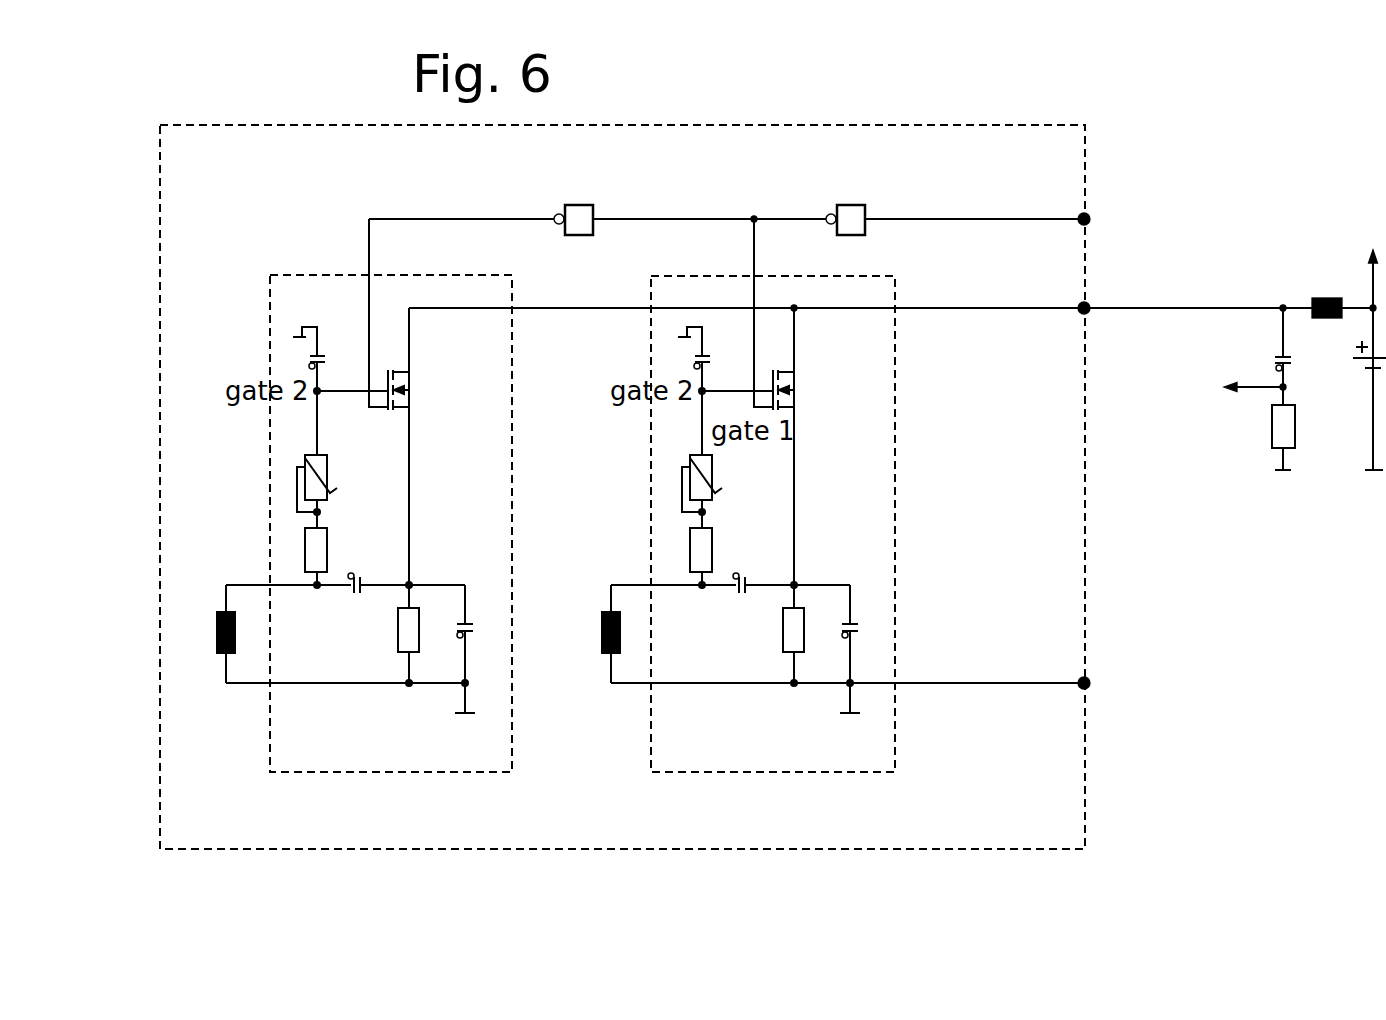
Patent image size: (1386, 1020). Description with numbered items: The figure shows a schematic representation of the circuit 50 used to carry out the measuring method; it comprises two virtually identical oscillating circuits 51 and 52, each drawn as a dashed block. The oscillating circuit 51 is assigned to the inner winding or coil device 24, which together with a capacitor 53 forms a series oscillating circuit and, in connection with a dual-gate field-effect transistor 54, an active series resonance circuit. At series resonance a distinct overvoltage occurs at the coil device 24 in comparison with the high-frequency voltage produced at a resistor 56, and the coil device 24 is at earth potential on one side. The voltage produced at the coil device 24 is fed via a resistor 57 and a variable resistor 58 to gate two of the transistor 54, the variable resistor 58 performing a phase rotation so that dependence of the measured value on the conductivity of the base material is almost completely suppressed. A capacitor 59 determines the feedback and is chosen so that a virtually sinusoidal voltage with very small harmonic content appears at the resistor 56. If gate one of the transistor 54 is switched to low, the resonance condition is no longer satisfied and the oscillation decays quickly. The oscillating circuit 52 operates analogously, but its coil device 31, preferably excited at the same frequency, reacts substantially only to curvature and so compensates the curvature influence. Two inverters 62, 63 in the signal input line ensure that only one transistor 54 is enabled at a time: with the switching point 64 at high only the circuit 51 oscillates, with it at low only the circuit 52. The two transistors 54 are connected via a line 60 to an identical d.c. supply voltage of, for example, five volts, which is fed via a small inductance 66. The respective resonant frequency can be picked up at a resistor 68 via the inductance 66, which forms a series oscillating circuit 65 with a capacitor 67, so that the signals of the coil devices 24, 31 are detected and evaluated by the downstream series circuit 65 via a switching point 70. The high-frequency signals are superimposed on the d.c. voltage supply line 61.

The coil device 24 is at (211, 673).
The coil device 31 is at (597, 673).
The circuit 50 is at (170, 857).
The oscillating circuit 51 is at (381, 793).
The oscillating circuit 52 is at (750, 793).
The capacitor 53 is at (352, 592).
The dual-gate field-effect transistor 54 is at (433, 418).
The resistor 56 is at (400, 637).
The resistor 57 is at (317, 552).
The variable resistor 58 is at (284, 450).
The capacitor 59 is at (477, 604).
The line 60 is at (968, 306).
The d.c. voltage supply line 61 is at (968, 216).
The inverter 62 is at (880, 184).
The inverter 63 is at (608, 184).
The switching point 64 is at (1106, 214).
The series oscillating circuit 65 is at (1330, 470).
The inductance 66 is at (1326, 274).
The capacitor 67 is at (1269, 349).
The resistor 68 is at (1258, 458).
The switching point 70 is at (1104, 334).